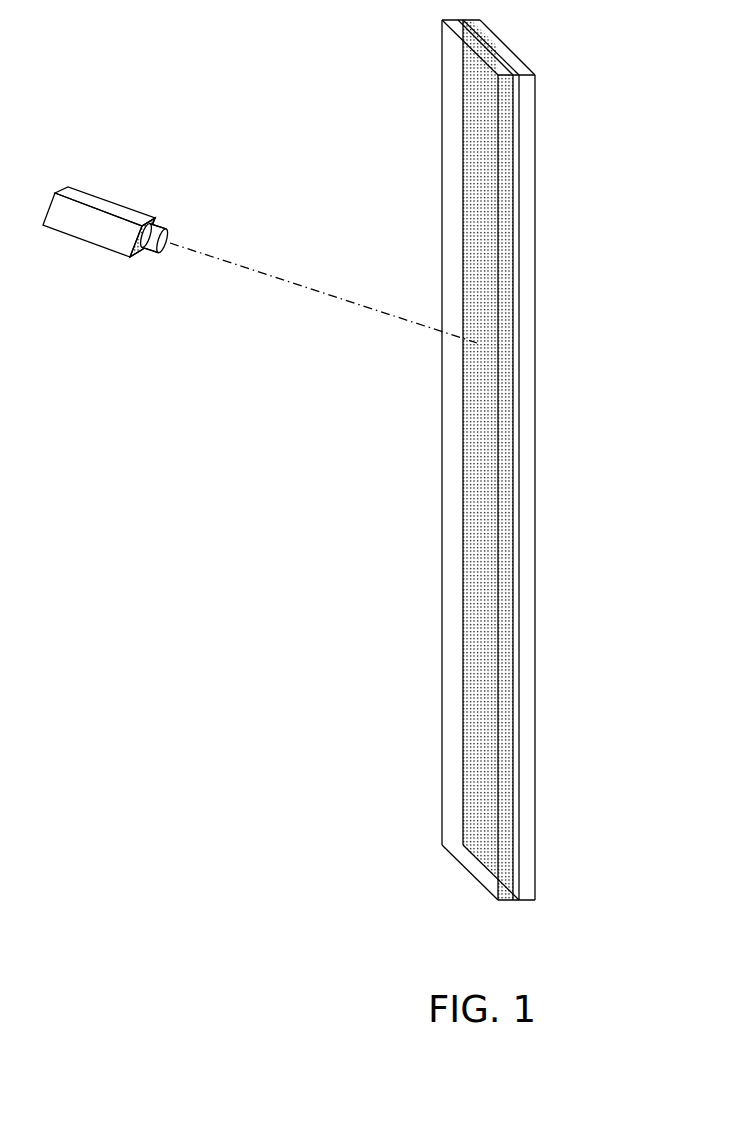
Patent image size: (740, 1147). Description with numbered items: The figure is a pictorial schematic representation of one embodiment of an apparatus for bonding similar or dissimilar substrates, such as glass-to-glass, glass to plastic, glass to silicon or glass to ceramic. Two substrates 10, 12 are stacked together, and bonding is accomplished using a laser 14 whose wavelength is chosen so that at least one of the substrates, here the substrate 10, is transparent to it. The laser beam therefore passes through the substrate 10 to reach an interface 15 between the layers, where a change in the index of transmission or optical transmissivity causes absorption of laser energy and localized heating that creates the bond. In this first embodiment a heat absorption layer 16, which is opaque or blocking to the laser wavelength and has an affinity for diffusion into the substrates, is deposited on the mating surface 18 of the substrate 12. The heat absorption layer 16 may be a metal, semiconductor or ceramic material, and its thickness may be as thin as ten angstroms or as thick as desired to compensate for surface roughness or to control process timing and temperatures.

The substrate 10 is at (442, 157).
The substrate 12 is at (535, 235).
The laser 14 is at (93, 202).
The interface 15 is at (522, 367).
The heat absorption layer 16 is at (507, 253).
The mating surface 18 is at (518, 127).